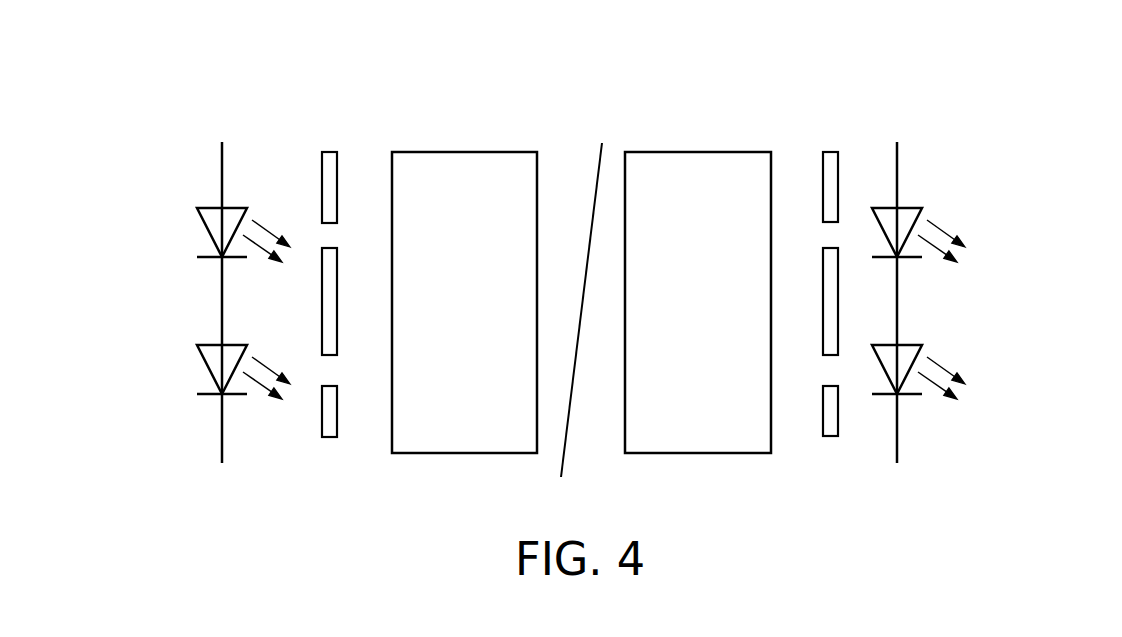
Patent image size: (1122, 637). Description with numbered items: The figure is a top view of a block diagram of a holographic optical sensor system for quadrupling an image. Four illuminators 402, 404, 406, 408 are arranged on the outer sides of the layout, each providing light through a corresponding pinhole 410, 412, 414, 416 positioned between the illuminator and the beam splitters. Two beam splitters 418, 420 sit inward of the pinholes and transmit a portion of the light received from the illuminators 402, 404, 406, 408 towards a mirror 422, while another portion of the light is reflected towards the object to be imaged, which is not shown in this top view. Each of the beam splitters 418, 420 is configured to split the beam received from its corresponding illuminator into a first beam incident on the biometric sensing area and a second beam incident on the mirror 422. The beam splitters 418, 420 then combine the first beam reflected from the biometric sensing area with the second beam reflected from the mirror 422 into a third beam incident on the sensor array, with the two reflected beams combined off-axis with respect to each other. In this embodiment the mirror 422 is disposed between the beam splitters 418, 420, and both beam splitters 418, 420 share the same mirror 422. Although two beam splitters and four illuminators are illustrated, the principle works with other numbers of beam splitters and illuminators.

The illuminator 402 is at (200, 225).
The illuminator 404 is at (207, 372).
The illuminator 406 is at (913, 203).
The illuminator 408 is at (913, 338).
The pinhole 410 is at (318, 233).
The pinhole 412 is at (327, 373).
The pinhole 414 is at (822, 237).
The pinhole 416 is at (827, 370).
The beam splitter 418 is at (463, 152).
The beam splitter 420 is at (695, 150).
The mirror 422 is at (598, 173).